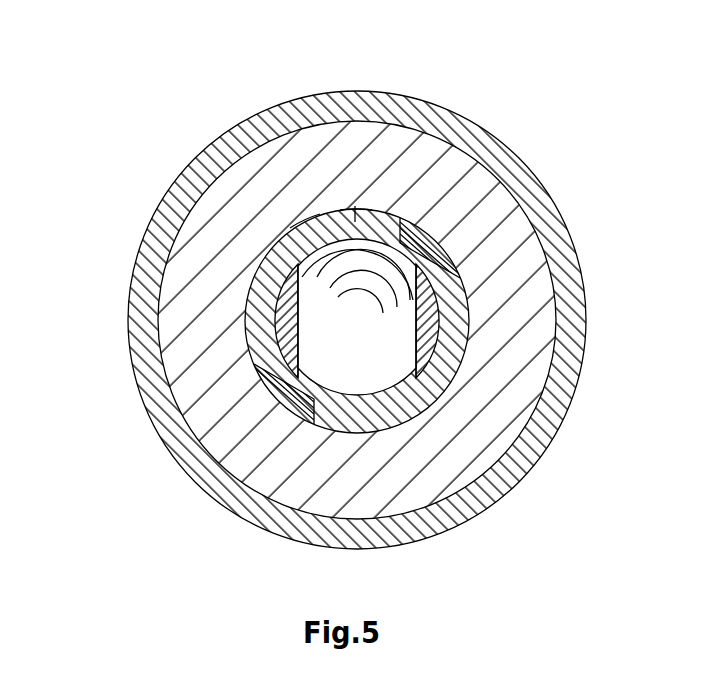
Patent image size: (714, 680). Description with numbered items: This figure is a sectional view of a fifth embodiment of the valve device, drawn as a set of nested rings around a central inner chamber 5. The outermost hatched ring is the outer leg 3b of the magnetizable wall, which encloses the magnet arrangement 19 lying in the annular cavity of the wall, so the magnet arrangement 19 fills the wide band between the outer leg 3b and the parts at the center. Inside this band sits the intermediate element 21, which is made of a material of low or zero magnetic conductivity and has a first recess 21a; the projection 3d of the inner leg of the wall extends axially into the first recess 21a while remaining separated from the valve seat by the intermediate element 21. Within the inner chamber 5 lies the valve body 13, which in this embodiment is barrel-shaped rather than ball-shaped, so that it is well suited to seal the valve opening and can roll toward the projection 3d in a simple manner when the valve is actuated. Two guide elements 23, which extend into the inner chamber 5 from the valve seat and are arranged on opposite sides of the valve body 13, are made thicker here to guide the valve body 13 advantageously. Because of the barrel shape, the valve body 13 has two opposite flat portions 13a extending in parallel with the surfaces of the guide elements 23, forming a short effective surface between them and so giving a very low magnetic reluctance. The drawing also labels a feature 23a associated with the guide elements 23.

The outer leg 3b is at (450, 137).
The projection 3d is at (355, 212).
The magnet arrangement 19 is at (448, 198).
The intermediate element 21 is at (420, 426).
The first recess 21a is at (280, 235).
The guide elements 23 is at (440, 312).
The protrusion 23a is at (445, 283).
The valve body 13 is at (296, 372).
The flat portions 13a is at (298, 312).
The inner chamber 5 is at (309, 402).